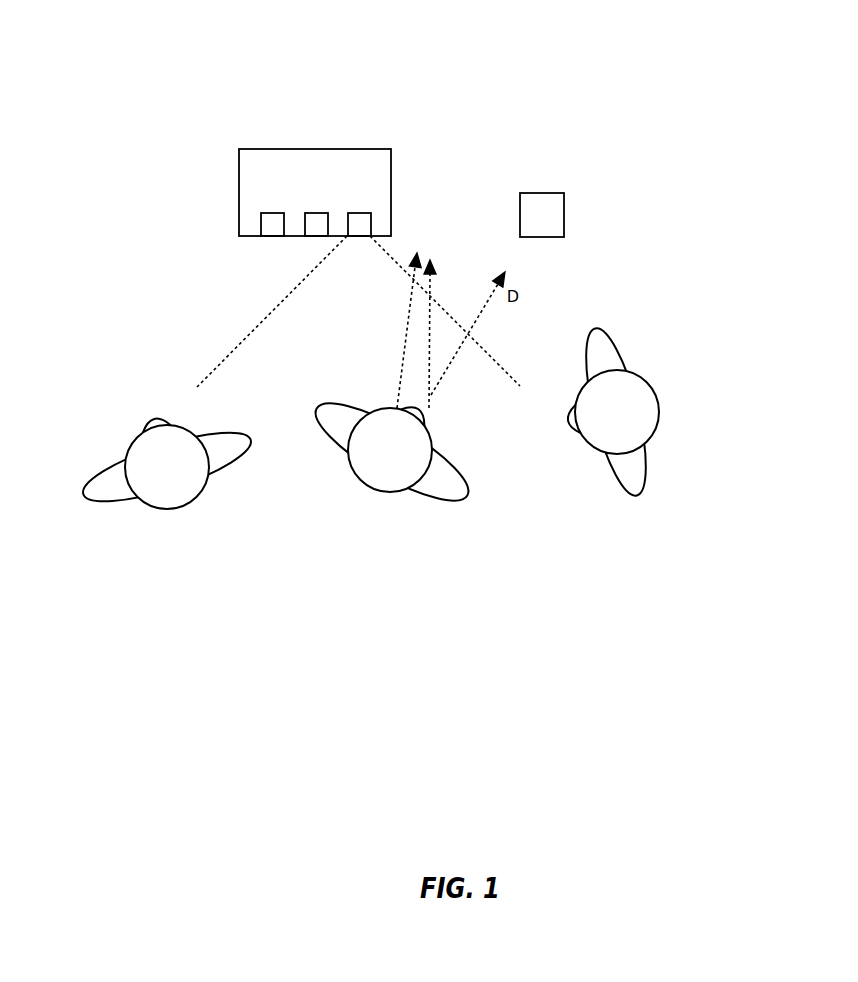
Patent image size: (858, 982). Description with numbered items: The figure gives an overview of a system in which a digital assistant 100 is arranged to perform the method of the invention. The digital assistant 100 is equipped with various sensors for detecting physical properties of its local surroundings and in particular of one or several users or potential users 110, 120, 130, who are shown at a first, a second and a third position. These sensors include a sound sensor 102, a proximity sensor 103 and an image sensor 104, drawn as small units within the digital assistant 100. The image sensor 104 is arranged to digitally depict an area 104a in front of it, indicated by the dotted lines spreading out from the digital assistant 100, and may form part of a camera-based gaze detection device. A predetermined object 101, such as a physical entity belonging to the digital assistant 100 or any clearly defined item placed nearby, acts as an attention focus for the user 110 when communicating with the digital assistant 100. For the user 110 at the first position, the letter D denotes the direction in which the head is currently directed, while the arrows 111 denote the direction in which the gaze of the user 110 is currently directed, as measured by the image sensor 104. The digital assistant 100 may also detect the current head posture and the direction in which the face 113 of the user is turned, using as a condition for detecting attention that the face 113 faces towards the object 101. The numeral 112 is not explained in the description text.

The digital assistant 100 is at (256, 148).
The predetermined object 101 is at (565, 212).
The sound sensor 102 is at (272, 213).
The proximity sensor 103 is at (327, 222).
The image sensor 104 is at (370, 224).
The area in front of the image sensor 104a is at (357, 311).
The user 110 is at (464, 546).
The gaze direction 111 is at (422, 320).
The user body 112 is at (400, 497).
The face of the user 113 is at (432, 420).
The user 120 is at (660, 400).
The user 130 is at (175, 510).